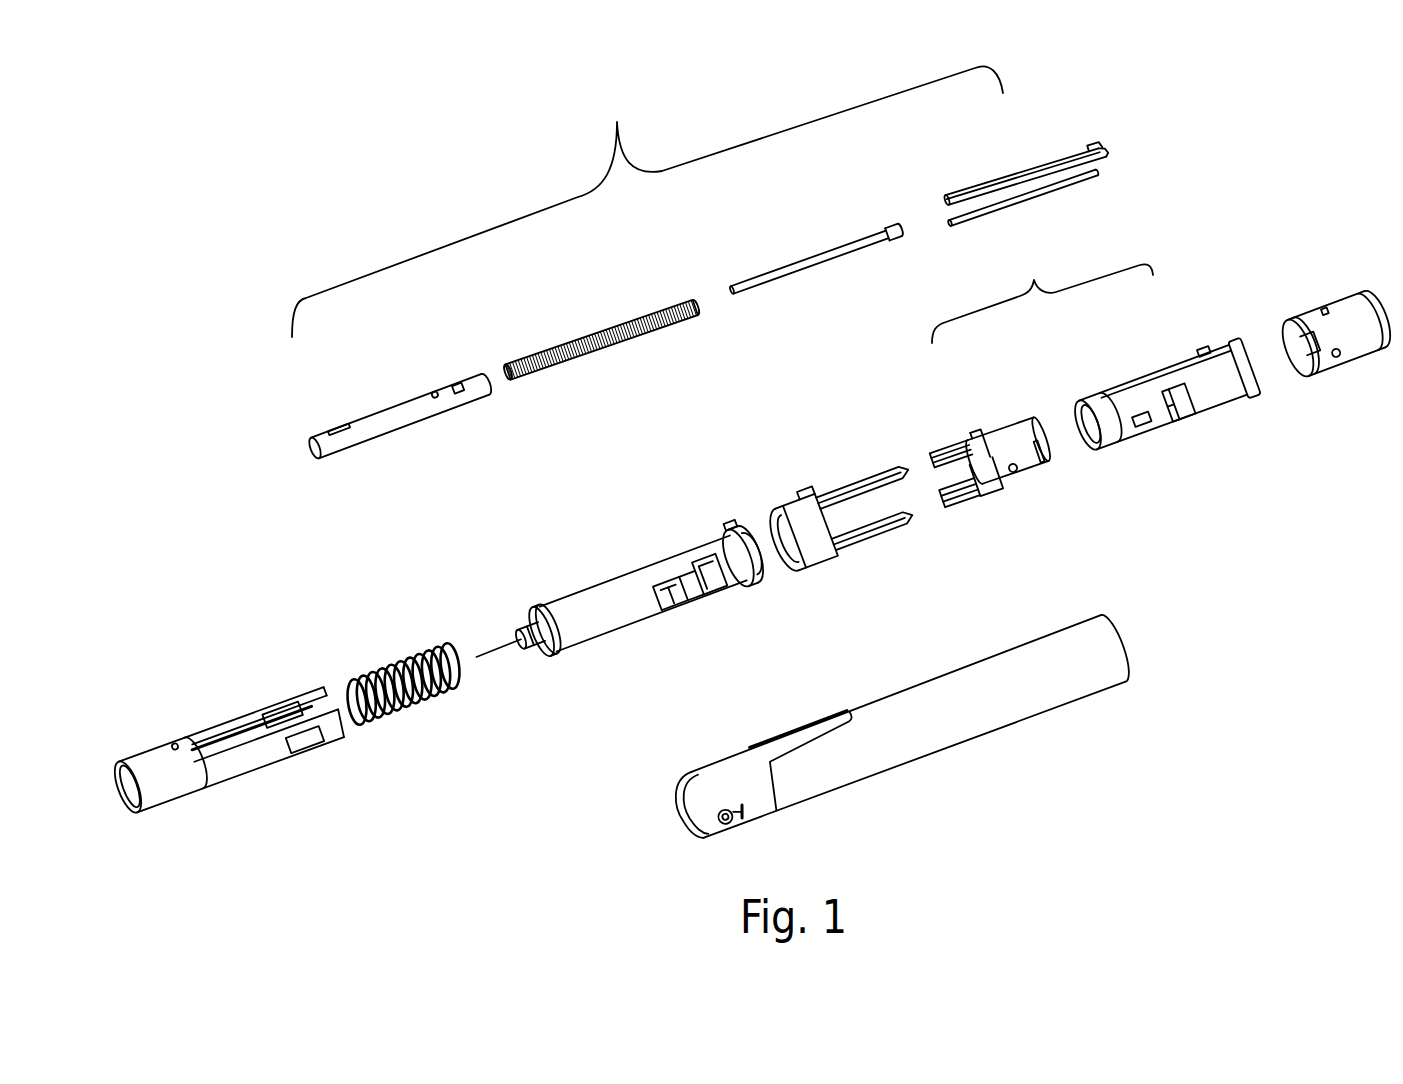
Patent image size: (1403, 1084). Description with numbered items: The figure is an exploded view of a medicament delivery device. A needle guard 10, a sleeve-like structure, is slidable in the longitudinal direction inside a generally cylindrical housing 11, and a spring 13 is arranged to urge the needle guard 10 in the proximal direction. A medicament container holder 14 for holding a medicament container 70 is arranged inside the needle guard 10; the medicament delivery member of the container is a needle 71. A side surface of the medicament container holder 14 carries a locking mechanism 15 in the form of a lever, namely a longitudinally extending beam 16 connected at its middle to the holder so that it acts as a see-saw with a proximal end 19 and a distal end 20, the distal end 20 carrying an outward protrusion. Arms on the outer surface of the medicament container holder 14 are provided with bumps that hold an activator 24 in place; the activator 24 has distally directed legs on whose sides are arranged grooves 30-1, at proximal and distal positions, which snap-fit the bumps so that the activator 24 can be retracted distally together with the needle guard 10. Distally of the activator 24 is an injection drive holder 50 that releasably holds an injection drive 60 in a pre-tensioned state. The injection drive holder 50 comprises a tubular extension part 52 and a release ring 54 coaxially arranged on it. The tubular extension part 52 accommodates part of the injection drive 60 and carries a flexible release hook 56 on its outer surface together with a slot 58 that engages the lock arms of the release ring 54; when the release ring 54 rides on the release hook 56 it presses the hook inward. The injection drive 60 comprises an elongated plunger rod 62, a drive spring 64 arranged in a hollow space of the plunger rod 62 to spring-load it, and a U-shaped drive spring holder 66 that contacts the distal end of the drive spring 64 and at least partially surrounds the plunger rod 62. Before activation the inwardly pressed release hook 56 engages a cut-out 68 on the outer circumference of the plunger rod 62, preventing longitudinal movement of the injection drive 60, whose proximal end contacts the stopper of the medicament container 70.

The needle guard 10 is at (147, 767).
The housing 11 is at (957, 720).
The spring 13 is at (390, 672).
The medicament container holder 14 is at (602, 595).
The locking mechanism 15 is at (685, 613).
The beam 16 is at (673, 568).
The proximal end 19 is at (670, 612).
The distal end 20 is at (717, 588).
The activator 24 is at (862, 483).
The grooves 30-1 is at (848, 546).
The injection drive holder 50 is at (1093, 389).
The tubular extension part 52 is at (1210, 380).
The release ring 54 is at (1017, 433).
The release hook 56 is at (1183, 412).
The slot 58 is at (1113, 412).
The injection drive 60 is at (700, 263).
The plunger rod 62 is at (390, 413).
The drive spring 64 is at (600, 337).
The drive spring holder 66 is at (1030, 170).
The cut-out 68 is at (435, 393).
The medicament container 70 is at (538, 627).
The needle 71 is at (510, 660).